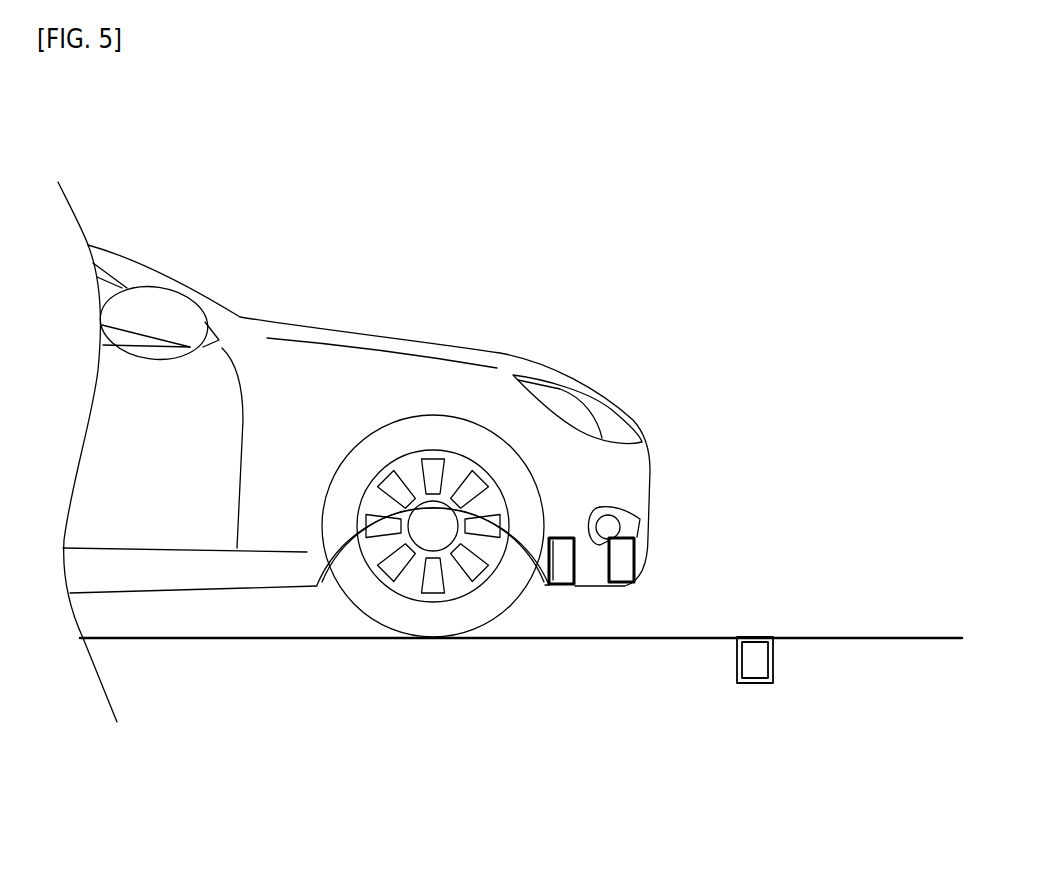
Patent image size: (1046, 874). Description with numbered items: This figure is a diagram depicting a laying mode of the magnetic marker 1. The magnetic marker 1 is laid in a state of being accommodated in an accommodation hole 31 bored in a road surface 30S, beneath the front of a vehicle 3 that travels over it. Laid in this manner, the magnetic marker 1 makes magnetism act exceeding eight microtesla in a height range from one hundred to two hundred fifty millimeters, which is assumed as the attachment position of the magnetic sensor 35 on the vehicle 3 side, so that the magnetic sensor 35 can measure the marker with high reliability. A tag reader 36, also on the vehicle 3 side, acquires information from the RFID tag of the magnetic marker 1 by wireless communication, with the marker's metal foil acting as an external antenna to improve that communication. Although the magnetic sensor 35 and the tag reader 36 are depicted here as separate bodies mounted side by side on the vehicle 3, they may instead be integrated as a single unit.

The vehicle 3 is at (407, 373).
The magnetic sensor 35 is at (620, 560).
The tag reader 36 is at (565, 573).
The road surface 30S is at (892, 637).
The accommodation hole 31 is at (747, 665).
The magnetic marker 1 is at (760, 663).